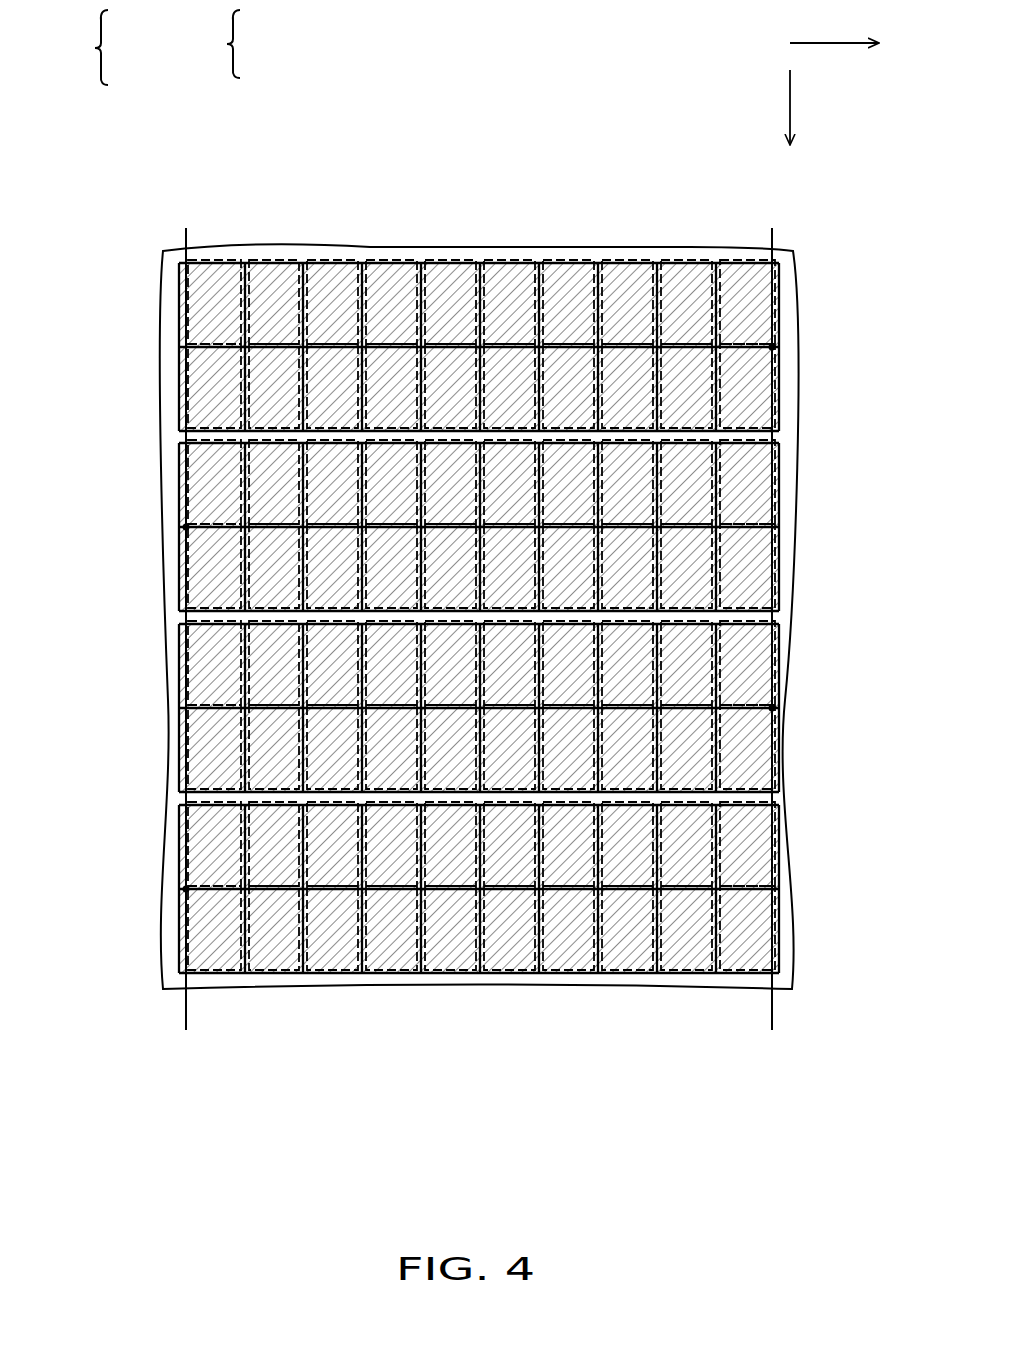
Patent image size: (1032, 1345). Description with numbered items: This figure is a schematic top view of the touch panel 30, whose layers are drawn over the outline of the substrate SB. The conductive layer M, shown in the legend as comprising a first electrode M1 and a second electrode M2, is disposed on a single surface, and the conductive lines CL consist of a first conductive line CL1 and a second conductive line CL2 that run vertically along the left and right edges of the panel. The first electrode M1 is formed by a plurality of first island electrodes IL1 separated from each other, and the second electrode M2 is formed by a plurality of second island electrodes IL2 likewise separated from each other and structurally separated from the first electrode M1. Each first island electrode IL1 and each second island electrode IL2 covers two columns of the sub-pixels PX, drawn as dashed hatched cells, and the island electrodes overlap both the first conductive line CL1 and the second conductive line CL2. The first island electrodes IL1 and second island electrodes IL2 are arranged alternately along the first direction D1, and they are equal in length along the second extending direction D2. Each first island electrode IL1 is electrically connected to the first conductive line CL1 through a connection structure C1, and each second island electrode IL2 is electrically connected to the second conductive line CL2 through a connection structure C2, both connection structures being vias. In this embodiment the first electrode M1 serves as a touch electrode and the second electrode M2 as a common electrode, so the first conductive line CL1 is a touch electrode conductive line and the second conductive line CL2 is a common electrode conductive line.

The touch panel 30 is at (889, 1140).
The substrate SB is at (786, 252).
The first island electrode IL1 is at (779, 287).
The second island electrode IL2 is at (180, 497).
The first electrode M1 is at (126, 22).
The second electrode M2 is at (128, 72).
The conductive layer M is at (90, 47).
The connection structure C1 is at (776, 346).
The connection structure C2 is at (182, 528).
The conductive lines CL is at (219, 44).
The first conductive line CL1 is at (772, 1007).
The second conductive line CL2 is at (186, 1007).
The sub-pixel PX is at (283, 975).
The first direction D1 is at (770, 107).
The second extending direction D2 is at (834, 22).